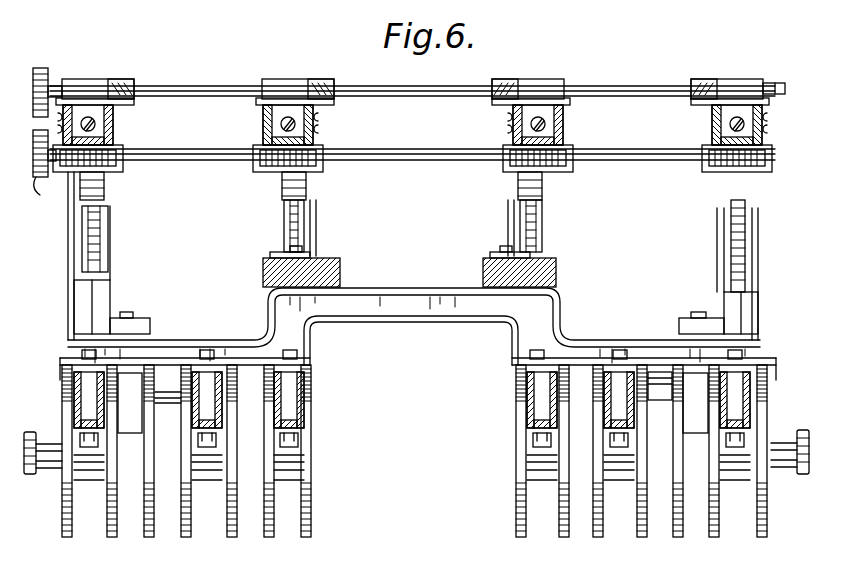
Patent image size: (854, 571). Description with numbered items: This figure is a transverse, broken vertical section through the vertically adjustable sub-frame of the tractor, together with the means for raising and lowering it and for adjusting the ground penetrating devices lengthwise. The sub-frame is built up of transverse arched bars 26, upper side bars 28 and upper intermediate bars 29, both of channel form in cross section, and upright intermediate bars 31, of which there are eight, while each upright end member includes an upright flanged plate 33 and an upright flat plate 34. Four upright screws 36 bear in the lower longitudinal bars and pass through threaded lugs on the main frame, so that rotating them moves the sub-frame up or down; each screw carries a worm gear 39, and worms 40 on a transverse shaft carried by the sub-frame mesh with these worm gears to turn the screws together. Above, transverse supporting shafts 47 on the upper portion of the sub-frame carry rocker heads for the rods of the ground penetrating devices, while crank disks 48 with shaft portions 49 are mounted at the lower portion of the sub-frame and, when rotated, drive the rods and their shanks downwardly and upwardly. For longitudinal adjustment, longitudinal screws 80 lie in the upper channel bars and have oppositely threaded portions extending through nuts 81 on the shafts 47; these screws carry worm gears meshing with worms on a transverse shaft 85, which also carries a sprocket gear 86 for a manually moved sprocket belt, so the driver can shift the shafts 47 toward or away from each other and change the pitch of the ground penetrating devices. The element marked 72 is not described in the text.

The transverse arched bars 26 is at (458, 312).
The upper side bars 28 is at (112, 122).
The upper intermediate bars 29 is at (316, 127).
The upright intermediate bars 31 is at (86, 297).
The upright flanged plate 33 is at (108, 238).
The upright flat plate 34 is at (68, 250).
The upright screws 36 is at (106, 190).
The worm gear 39 is at (123, 165).
The worms 40 is at (421, 154).
The transverse supporting shafts 47 is at (120, 92).
The crank disks 48 is at (75, 538).
The shaft portions 49 is at (130, 507).
The knob 72 is at (40, 196).
The longitudinal screws 80 is at (90, 118).
The nuts 81 is at (83, 110).
The transverse shaft 85 is at (218, 92).
The sprocket gear 86 is at (36, 70).